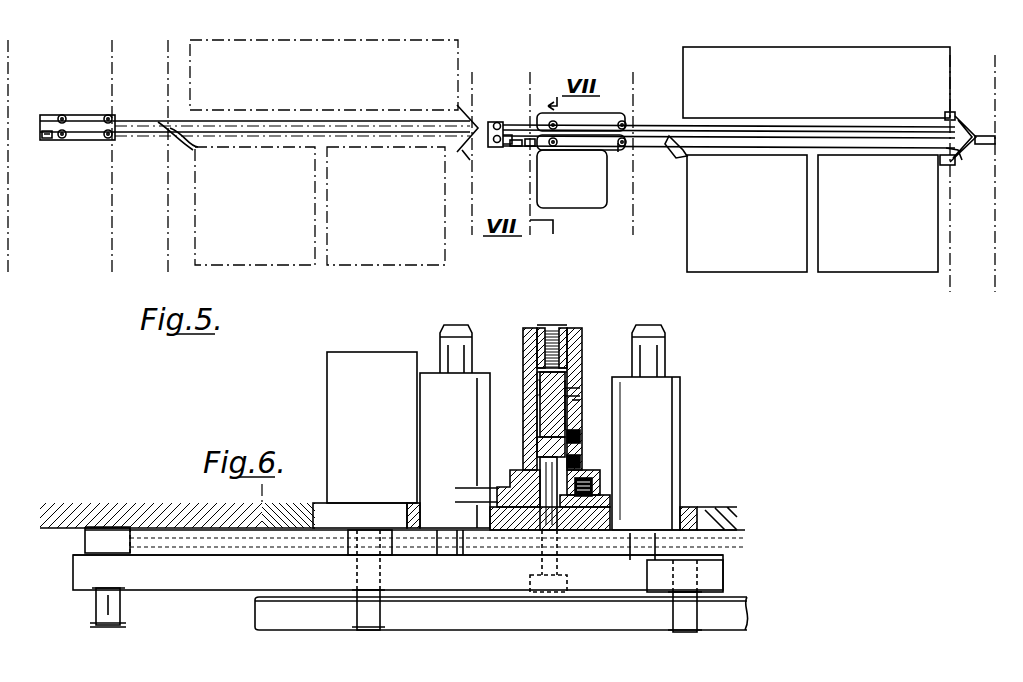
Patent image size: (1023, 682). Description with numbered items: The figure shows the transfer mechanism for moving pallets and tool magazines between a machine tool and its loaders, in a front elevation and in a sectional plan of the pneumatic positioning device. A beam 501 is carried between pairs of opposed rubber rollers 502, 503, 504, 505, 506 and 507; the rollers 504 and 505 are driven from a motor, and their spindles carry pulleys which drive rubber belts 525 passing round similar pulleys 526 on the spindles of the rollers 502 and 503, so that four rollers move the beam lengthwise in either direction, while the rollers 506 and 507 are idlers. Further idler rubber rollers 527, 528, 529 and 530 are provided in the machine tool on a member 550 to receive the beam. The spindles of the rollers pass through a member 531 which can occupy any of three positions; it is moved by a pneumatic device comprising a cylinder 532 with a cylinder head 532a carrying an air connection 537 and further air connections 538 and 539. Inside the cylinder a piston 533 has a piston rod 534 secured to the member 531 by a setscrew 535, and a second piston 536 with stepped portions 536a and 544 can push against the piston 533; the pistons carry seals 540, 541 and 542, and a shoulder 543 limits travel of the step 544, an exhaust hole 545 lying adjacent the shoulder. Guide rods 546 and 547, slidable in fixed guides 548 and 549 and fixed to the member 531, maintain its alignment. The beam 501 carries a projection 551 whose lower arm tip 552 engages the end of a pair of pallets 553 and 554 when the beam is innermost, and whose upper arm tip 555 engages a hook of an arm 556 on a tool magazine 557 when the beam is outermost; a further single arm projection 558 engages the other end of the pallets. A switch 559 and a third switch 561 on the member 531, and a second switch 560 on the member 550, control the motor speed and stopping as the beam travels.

In FIG. 5, the beam 501 is at (740, 128).
In FIG. 6, the beam 501 is at (592, 606).
In FIG. 5, the rubber roller 502 is at (499, 121).
In FIG. 6, the rubber roller 502 is at (100, 598).
In FIG. 5, the rubber roller 503 is at (505, 145).
In FIG. 5, the rubber roller 504 is at (557, 121).
In FIG. 6, the rubber roller 504 is at (375, 616).
In FIG. 5, the rubber roller 505 is at (554, 147).
In FIG. 5, the rubber roller 506 is at (625, 121).
In FIG. 6, the rubber roller 506 is at (690, 613).
In FIG. 5, the rubber roller 507 is at (623, 146).
In FIG. 6, the rubber belt 525 is at (88, 541).
In FIG. 6, the pulley 526 is at (94, 527).
In FIG. 5, the idler rubber roller 527 is at (62, 115).
In FIG. 5, the idler rubber roller 528 is at (61, 139).
In FIG. 5, the idler rubber roller 529 is at (109, 115).
In FIG. 5, the idler rubber roller 530 is at (107, 138).
In FIG. 6, the member 531 is at (222, 575).
In FIG. 6, the cylinder 532 is at (568, 340).
In FIG. 6, the cylinder head 532a is at (557, 331).
In FIG. 6, the piston 533 is at (592, 482).
In FIG. 6, the piston rod 534 is at (510, 470).
In FIG. 6, the setscrew 535 is at (530, 577).
In FIG. 6, the second piston 536 is at (545, 435).
In FIG. 6, the stepped portion 536a is at (578, 436).
In FIG. 6, the air connection 537 is at (534, 328).
In FIG. 6, the air connection 538 is at (580, 462).
In FIG. 6, the air connection 539 is at (600, 492).
In FIG. 6, the seal 540 is at (527, 378).
In FIG. 6, the seal 541 is at (540, 407).
In FIG. 6, the seal 542 is at (537, 446).
In FIG. 6, the shoulder 543 is at (572, 402).
In FIG. 6, the step 544 is at (572, 393).
In FIG. 6, the exhaust hole 545 is at (660, 392).
In FIG. 6, the guide rod 546 is at (655, 548).
In FIG. 6, the guide rod 547 is at (466, 550).
In FIG. 6, the fixed guide 548 is at (681, 393).
In FIG. 6, the fixed guide 549 is at (433, 386).
In FIG. 5, the member 550 is at (70, 114).
In FIG. 5, the projection 551 is at (958, 150).
In FIG. 5, the tip 552 is at (940, 162).
In FIG. 5, the pallet 553 is at (775, 219).
In FIG. 5, the pallet 554 is at (898, 219).
In FIG. 5, the tip 555 is at (948, 118).
In FIG. 5, the arm 556 is at (962, 100).
In FIG. 5, the tool magazine 557 is at (692, 56).
In FIG. 5, the single arm projection 558 is at (671, 149).
In FIG. 5, the switch 559 is at (517, 147).
In FIG. 5, the second switch 560 is at (47, 139).
In FIG. 5, the third switch 561 is at (527, 148).